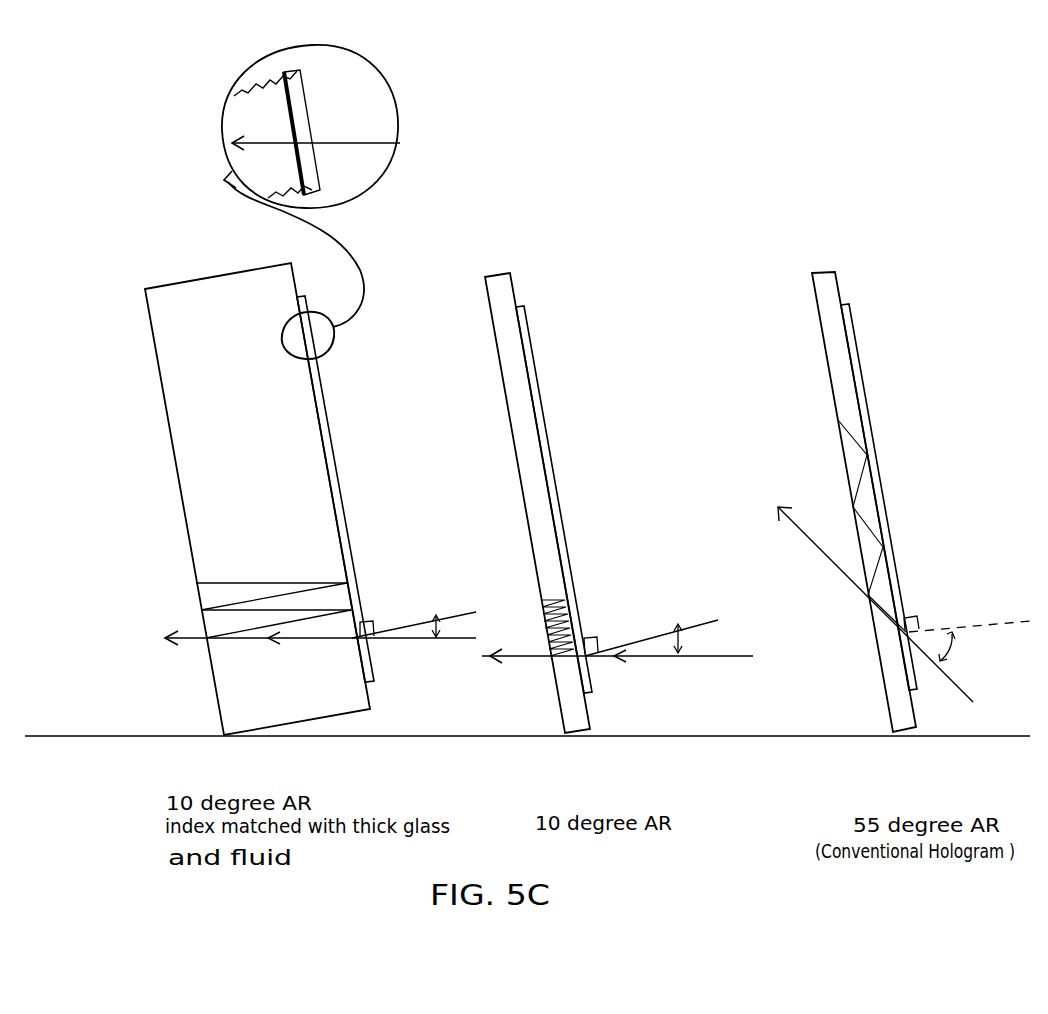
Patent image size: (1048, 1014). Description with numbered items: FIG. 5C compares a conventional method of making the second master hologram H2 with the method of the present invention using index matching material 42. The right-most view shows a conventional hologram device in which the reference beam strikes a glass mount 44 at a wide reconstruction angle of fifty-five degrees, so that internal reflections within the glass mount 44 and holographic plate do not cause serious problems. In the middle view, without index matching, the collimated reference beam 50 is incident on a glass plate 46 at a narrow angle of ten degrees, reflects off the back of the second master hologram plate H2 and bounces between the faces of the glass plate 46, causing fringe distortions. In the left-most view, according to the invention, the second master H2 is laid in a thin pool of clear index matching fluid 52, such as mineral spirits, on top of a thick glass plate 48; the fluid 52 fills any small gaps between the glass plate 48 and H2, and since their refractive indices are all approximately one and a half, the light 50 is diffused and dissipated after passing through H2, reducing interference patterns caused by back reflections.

The index matching material 42 is at (186, 233).
The glass mount 44 is at (820, 272).
The glass plate 46 is at (497, 275).
The thick glass plate 48 is at (178, 284).
The collimated reference beam 50 is at (383, 146).
The index matching fluid 52 is at (290, 80).
The second master hologram H2 is at (301, 69).